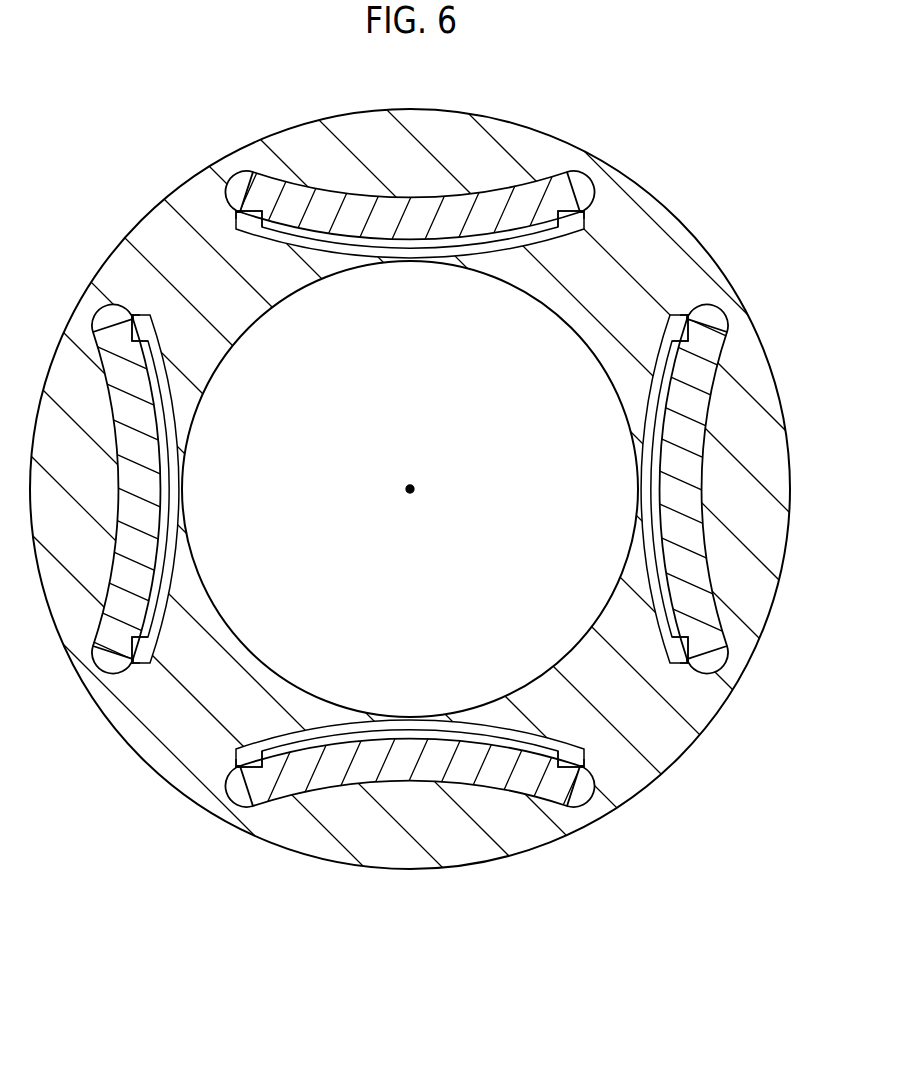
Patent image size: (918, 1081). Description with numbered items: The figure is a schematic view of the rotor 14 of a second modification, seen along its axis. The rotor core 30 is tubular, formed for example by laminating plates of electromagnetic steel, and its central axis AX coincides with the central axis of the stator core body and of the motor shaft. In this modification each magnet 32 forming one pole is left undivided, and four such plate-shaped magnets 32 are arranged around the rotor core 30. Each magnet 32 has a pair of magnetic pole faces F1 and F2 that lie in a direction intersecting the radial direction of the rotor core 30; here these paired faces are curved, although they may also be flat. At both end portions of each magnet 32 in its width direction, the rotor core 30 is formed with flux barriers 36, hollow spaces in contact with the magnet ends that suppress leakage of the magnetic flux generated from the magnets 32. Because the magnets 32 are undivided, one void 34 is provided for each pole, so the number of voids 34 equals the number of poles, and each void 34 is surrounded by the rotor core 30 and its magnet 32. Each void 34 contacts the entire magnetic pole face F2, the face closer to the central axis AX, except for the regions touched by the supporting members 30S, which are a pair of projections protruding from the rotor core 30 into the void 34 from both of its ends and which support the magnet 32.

The rotor 14 is at (94, 131).
The rotor core 30 is at (550, 837).
The supporting members 30S is at (680, 337).
The magnet 32 is at (493, 204).
The void 34 is at (663, 410).
The flux barrier 36 is at (713, 318).
The central axis AX is at (405, 491).
The magnetic pole face F1 is at (718, 381).
The magnetic pole face F2 is at (660, 450).